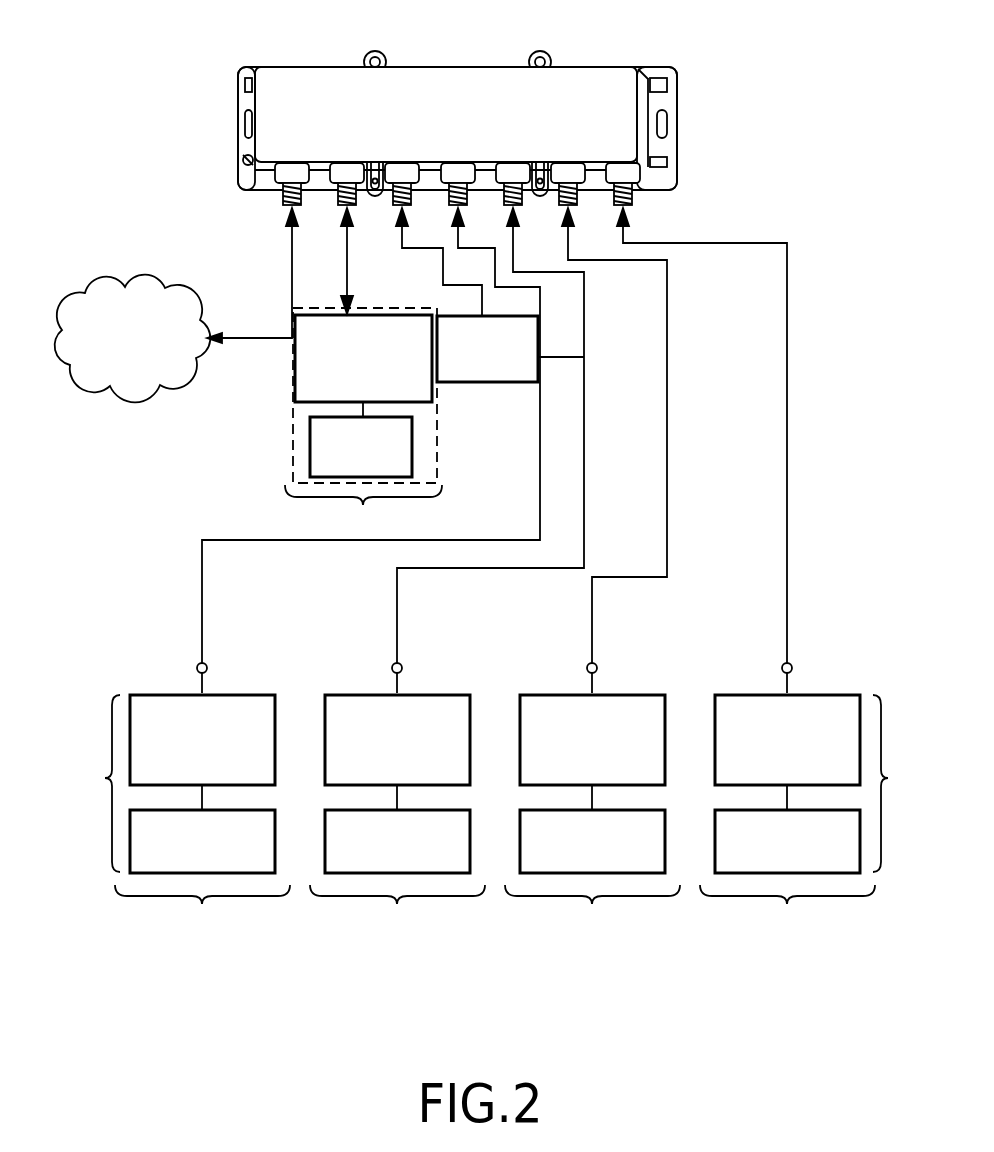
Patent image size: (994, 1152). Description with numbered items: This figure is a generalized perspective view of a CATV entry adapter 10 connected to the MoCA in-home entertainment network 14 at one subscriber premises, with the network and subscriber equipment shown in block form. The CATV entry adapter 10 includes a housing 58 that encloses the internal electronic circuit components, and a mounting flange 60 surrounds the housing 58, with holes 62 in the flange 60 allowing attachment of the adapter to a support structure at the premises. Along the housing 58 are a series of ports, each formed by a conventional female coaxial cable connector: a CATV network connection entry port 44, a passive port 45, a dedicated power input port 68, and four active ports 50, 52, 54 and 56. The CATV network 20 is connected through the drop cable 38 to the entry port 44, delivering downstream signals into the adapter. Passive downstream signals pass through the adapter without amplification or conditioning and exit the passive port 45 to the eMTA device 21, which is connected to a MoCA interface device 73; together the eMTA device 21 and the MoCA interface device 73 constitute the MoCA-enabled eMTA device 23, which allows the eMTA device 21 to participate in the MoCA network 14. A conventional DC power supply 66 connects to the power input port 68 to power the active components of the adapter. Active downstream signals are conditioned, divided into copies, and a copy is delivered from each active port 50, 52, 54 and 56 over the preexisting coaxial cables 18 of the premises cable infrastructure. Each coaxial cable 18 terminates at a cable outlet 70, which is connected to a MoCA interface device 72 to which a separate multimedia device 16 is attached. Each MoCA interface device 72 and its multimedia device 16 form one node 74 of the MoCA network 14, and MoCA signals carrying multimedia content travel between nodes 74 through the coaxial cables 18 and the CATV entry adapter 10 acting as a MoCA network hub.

The CATV entry adapter 10 is at (762, 75).
The housing 58 is at (603, 66).
The mounting flange 60 is at (386, 54).
The holes 62 is at (366, 53).
The CATV network connection entry port 44 is at (285, 197).
The passive port 45 is at (341, 197).
The power input port 68 is at (410, 197).
The active port 50 is at (466, 197).
The active port 52 is at (521, 197).
The active port 54 is at (576, 197).
The active port 56 is at (632, 197).
The drop cable 38 is at (290, 282).
The coaxial cables 18 is at (584, 297).
The CATV network 20 is at (95, 387).
The MoCA-enabled eMTA device 23 is at (290, 418).
The MoCA interface device 73 is at (294, 352).
The eMTA device 21 is at (309, 452).
The DC power supply 66 is at (488, 384).
The MoCA interface device 72 is at (232, 695).
The multimedia device 16 is at (275, 843).
The cable outlet 70 is at (196, 666).
The node 74 is at (202, 932).
The MoCA in-home entertainment network 14 is at (853, 440).